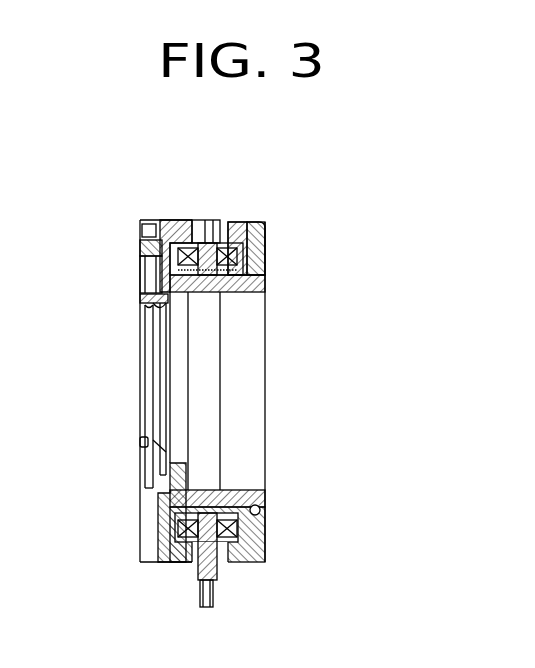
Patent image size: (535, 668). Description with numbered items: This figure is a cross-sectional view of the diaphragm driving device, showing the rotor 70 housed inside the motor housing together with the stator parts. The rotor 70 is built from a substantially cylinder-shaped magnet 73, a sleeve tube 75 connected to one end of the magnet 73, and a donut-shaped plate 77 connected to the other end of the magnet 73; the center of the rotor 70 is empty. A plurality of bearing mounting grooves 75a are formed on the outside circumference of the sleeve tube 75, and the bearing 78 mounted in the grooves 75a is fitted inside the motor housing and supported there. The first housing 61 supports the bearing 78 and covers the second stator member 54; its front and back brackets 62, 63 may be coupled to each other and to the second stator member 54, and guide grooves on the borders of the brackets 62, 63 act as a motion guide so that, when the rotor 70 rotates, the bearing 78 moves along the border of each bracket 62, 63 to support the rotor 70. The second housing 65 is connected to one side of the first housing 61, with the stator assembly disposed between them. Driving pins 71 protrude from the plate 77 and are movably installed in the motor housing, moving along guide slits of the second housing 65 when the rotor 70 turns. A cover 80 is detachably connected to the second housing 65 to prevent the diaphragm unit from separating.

The rotor 70 is at (288, 257).
The second stator member 54 is at (268, 242).
The first housing 61 is at (265, 176).
The front bracket 62 is at (243, 222).
The back bracket 63 is at (266, 224).
The magnet 73 is at (186, 250).
The sleeve tube 75 is at (243, 292).
The bearing mounting grooves 75a is at (268, 500).
The bearing 78 is at (260, 511).
The cover 80 is at (138, 272).
The driving pins 71 is at (140, 299).
The plate 77 is at (144, 320).
The second housing 65 is at (162, 563).